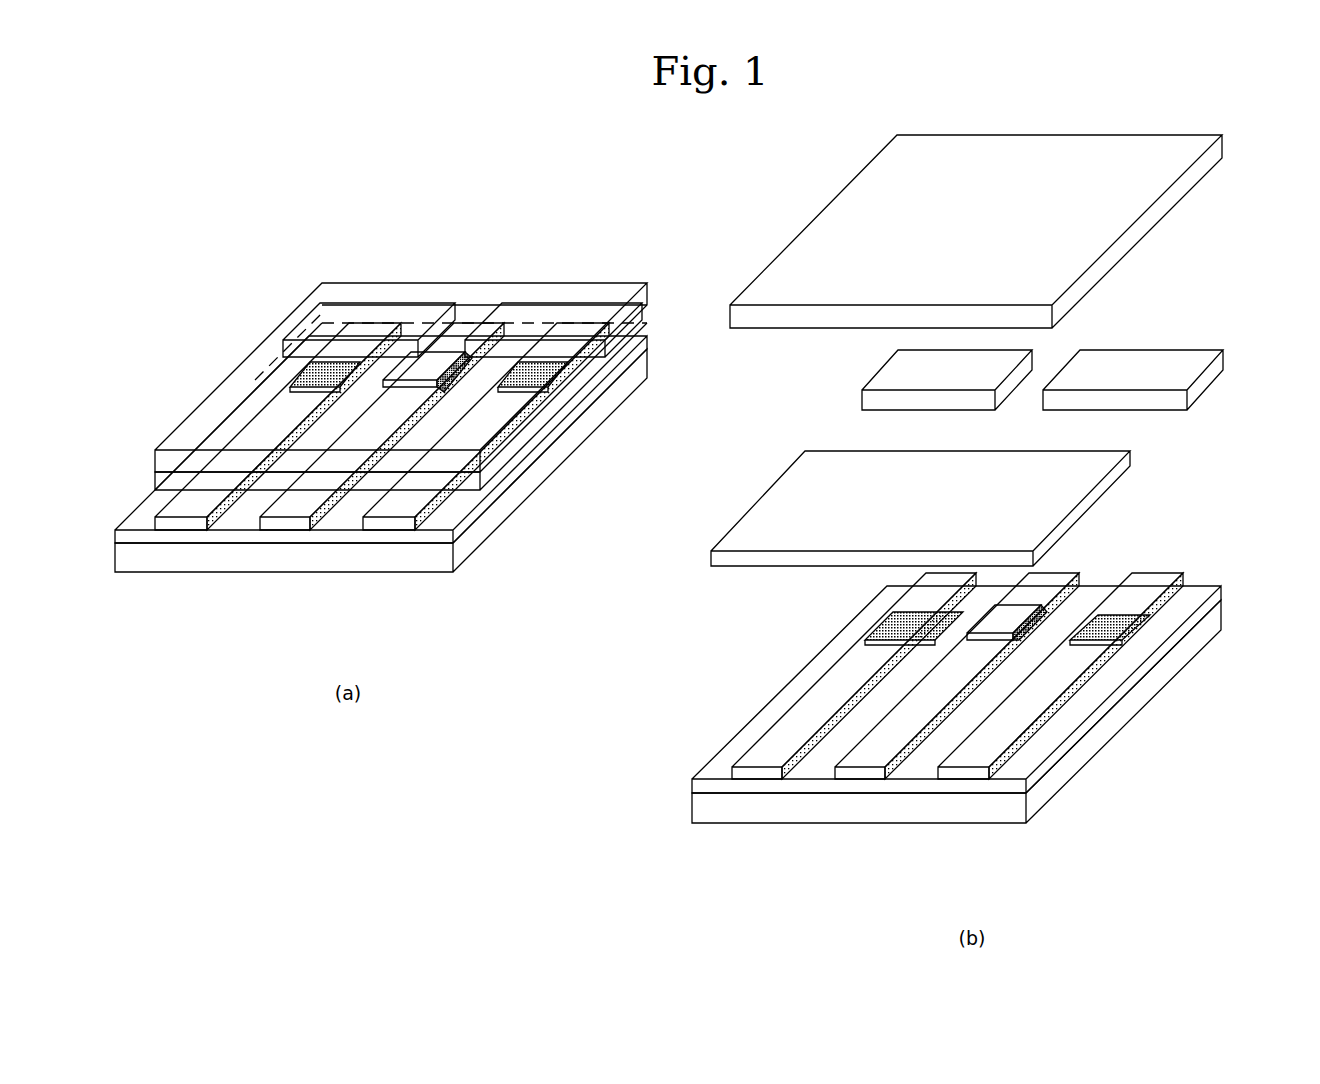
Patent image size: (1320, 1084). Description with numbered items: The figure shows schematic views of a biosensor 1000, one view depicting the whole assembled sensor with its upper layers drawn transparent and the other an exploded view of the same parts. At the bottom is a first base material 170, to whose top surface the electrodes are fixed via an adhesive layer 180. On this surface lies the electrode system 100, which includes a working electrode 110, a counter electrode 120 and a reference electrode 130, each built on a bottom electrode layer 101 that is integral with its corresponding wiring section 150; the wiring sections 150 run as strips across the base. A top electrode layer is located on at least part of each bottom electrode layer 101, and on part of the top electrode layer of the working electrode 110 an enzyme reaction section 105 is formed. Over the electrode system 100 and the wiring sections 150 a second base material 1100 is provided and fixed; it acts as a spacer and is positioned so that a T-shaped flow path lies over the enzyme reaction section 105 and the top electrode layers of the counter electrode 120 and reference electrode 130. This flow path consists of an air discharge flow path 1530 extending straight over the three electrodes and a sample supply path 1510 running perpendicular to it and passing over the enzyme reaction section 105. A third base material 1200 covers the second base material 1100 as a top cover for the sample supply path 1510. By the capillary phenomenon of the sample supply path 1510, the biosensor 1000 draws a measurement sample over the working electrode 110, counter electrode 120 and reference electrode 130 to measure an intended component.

The electrode system 100 is at (378, 200).
The bottom electrode layer 101 is at (185, 525).
The enzyme reaction section 105 is at (1007, 621).
The working electrode 110 is at (440, 368).
The counter electrode 120 is at (335, 362).
The reference electrode 130 is at (542, 360).
The wiring section 150 is at (458, 612).
The first base material 170 is at (473, 538).
The adhesive layer 180 is at (507, 474).
The biosensor 1000 is at (537, 612).
The second base material 1100 is at (312, 302).
The third base material 1200 is at (252, 355).
The sample supply path 1510 is at (1055, 360).
The air discharge flow path 1530 is at (1135, 434).